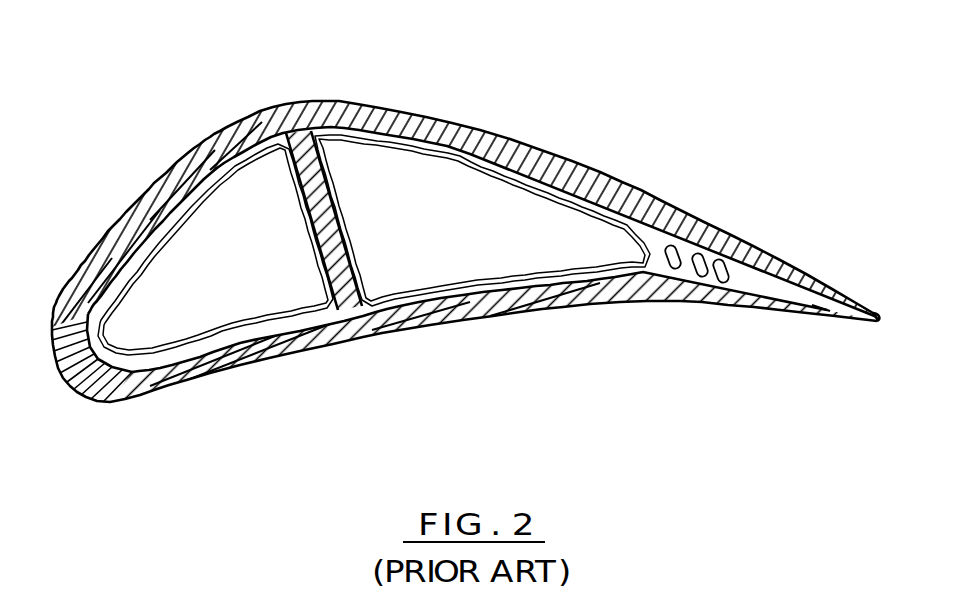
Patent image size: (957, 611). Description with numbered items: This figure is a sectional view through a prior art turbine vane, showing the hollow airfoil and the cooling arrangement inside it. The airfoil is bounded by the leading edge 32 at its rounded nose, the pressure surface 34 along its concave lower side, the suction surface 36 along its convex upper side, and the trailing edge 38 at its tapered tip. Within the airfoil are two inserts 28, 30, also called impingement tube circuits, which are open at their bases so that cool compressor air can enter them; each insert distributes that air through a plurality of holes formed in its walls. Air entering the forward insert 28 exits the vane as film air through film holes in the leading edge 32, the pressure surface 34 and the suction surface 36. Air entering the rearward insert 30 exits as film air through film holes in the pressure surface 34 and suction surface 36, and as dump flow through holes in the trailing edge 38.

The insert 28 is at (224, 325).
The insert 30 is at (510, 274).
The leading edge 32 is at (57, 303).
The pressure surface 34 is at (245, 367).
The suction surface 36 is at (247, 112).
The trailing edge 38 is at (877, 322).